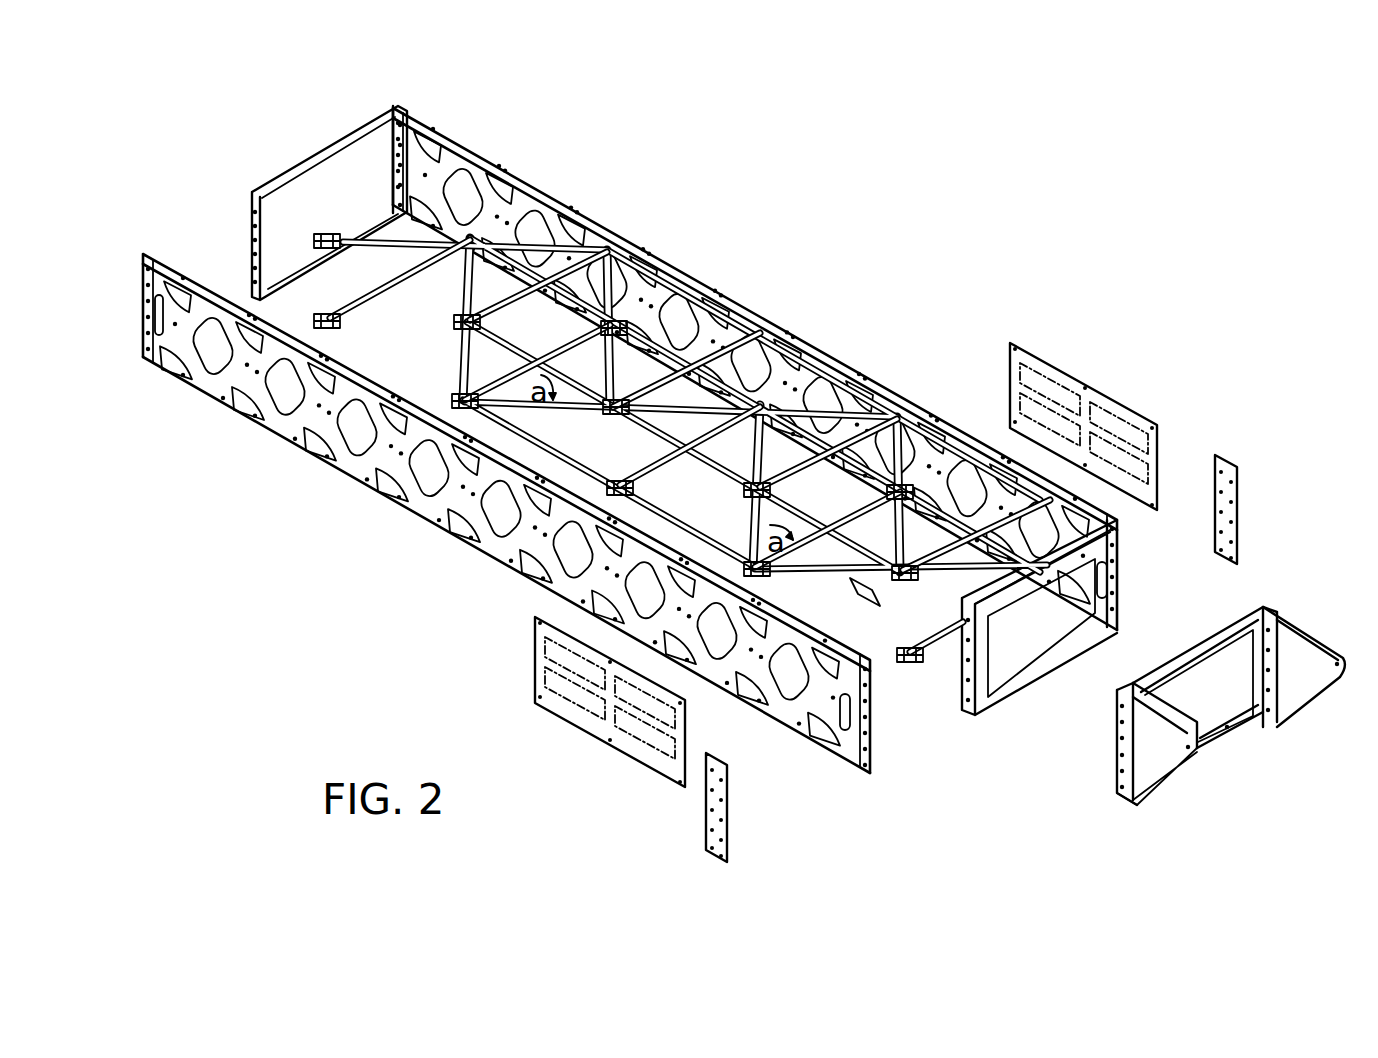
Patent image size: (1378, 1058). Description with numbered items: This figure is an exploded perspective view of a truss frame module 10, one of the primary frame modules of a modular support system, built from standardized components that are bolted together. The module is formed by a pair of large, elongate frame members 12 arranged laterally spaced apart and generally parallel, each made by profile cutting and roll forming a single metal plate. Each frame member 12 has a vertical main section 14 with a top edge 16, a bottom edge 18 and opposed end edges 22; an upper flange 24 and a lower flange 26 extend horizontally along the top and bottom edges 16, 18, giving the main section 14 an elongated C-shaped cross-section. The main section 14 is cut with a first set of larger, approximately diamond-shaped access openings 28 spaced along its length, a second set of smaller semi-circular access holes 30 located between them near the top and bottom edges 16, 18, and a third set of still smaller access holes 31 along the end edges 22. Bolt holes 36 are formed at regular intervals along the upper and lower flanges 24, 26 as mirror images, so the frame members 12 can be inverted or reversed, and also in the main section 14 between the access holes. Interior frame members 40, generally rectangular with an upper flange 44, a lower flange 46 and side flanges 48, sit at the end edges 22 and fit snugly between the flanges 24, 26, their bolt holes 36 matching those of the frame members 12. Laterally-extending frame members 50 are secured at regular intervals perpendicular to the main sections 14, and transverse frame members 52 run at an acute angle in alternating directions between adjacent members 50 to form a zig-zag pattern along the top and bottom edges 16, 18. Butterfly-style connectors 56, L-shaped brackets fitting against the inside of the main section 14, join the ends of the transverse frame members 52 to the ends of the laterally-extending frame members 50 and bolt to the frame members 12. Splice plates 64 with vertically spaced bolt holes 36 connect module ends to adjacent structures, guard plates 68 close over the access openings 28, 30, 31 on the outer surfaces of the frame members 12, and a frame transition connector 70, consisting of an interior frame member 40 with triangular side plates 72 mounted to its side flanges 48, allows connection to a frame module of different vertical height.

The truss frame module 10 is at (908, 203).
The elongate frame member 12 is at (804, 337).
The vertical main section 14 is at (940, 453).
The top edge 16 is at (443, 127).
The bottom edge 18 is at (212, 407).
The end edge 22 is at (148, 256).
The upper flange 24 is at (484, 163).
The lower flange 26 is at (873, 757).
The access opening 28 is at (688, 305).
The access hole 30 is at (635, 255).
The access hole 31 is at (157, 355).
The bolt hole 36 is at (554, 193).
The interior frame member 40 is at (313, 152).
The upper flange 44 is at (350, 136).
The lower flange 46 is at (300, 257).
The side flange 48 is at (259, 236).
The laterally-extending frame member 50 is at (548, 296).
The transverse frame member 52 is at (482, 228).
The butterfly-style connector 56 is at (455, 322).
The splice plate 64 is at (1223, 453).
The guard plate 68 is at (1066, 368).
The frame transition connector 70 is at (1303, 615).
The triangular side plate 72 is at (1295, 663).